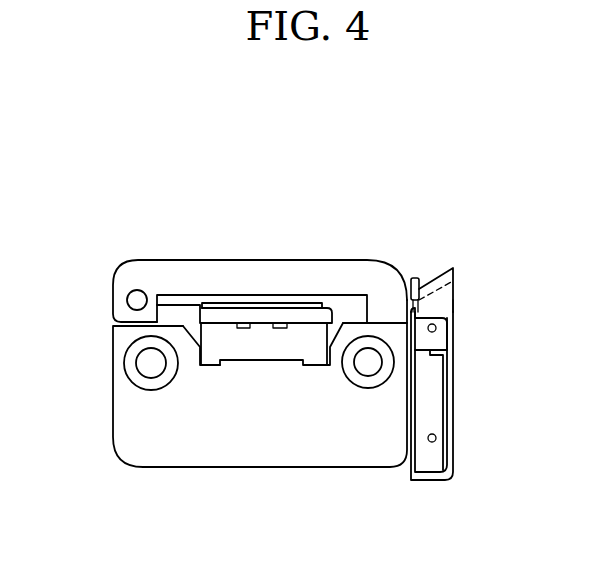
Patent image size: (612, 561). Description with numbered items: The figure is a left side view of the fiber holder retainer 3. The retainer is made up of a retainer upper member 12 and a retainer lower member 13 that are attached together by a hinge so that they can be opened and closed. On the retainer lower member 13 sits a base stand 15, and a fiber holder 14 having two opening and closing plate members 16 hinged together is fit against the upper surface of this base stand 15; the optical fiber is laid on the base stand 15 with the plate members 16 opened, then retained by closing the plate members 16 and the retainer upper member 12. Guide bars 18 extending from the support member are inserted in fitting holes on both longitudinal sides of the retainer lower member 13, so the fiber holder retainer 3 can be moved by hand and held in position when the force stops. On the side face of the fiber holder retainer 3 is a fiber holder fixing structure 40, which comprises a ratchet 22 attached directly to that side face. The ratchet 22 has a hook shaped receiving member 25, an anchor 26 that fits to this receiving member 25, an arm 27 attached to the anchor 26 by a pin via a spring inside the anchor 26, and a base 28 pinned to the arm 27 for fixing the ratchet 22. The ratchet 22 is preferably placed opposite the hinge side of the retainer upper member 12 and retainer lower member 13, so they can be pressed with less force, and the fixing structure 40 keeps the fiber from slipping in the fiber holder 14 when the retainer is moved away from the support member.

The fiber holder retainer 3 is at (110, 350).
The retainer upper member 12 is at (298, 260).
The retainer lower member 13 is at (182, 452).
The fiber holder 14 is at (278, 360).
The base stand 15 is at (245, 350).
The opening and closing plate member 16 is at (228, 317).
The guide bar 18 is at (152, 364).
The ratchet 22 is at (454, 289).
The receiving member 25 is at (415, 277).
The anchor 26 is at (454, 302).
The arm 27 is at (455, 442).
The base 28 is at (458, 340).
The fiber holder fixing structure 40 is at (462, 258).